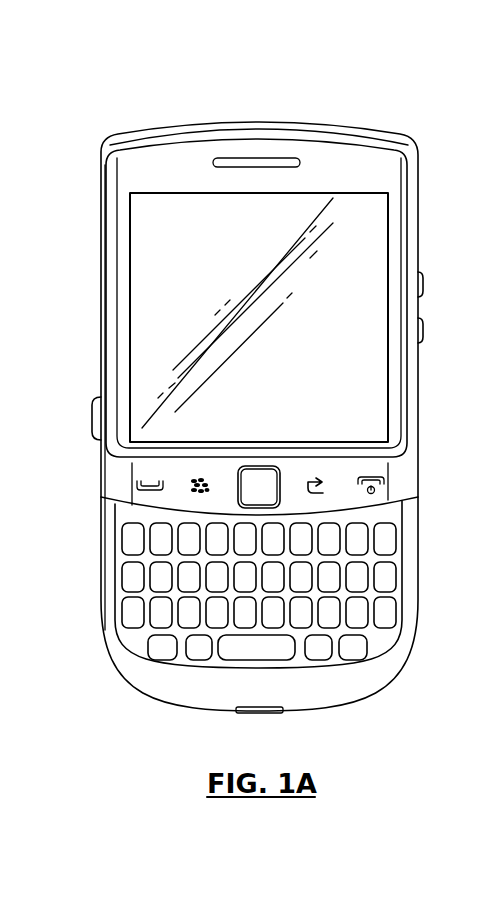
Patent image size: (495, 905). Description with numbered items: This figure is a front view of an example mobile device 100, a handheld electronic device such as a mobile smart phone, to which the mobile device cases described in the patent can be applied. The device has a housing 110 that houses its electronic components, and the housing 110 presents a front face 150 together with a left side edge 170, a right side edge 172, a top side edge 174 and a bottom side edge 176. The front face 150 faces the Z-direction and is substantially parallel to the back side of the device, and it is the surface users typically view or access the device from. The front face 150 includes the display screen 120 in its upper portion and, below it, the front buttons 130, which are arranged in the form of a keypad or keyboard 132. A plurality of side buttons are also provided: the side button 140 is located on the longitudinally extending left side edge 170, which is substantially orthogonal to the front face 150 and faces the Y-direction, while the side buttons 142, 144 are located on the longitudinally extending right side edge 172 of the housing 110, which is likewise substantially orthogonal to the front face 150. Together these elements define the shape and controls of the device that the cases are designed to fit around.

The mobile device 100 is at (343, 107).
The housing 110 is at (408, 478).
The display screen 120 is at (338, 346).
The front buttons 130 is at (180, 628).
The keyboard 132 is at (394, 609).
The side button 140 is at (94, 407).
The side button 142 is at (421, 281).
The side button 144 is at (422, 330).
The front face 150 is at (145, 249).
The left side edge 170 is at (101, 473).
The right side edge 172 is at (418, 438).
The top side edge 174 is at (157, 133).
The bottom side edge 176 is at (347, 707).